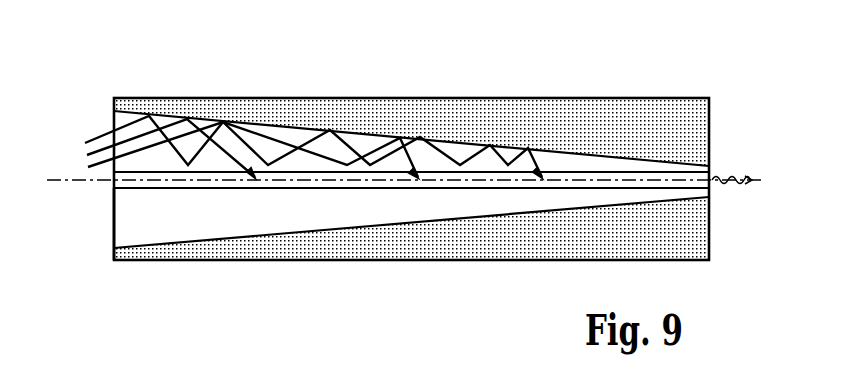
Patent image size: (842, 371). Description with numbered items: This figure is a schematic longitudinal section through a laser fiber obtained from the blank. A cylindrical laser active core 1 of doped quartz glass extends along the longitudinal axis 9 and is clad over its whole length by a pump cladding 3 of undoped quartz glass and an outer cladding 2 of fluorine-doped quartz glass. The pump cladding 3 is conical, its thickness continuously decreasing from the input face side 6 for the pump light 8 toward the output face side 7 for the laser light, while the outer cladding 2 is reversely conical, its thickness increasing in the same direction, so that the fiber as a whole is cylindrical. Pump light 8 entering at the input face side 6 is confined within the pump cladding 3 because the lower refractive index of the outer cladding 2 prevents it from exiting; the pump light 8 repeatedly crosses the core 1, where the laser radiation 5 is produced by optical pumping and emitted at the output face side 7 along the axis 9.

The laser active core 1 is at (442, 180).
The outer cladding 2 is at (360, 255).
The pump cladding 3 is at (265, 220).
The laser radiation 5 is at (722, 190).
The input face side 6 is at (113, 212).
The output face side 7 is at (710, 167).
The pump light 8 is at (292, 147).
The longitudinal axis 9 is at (62, 180).